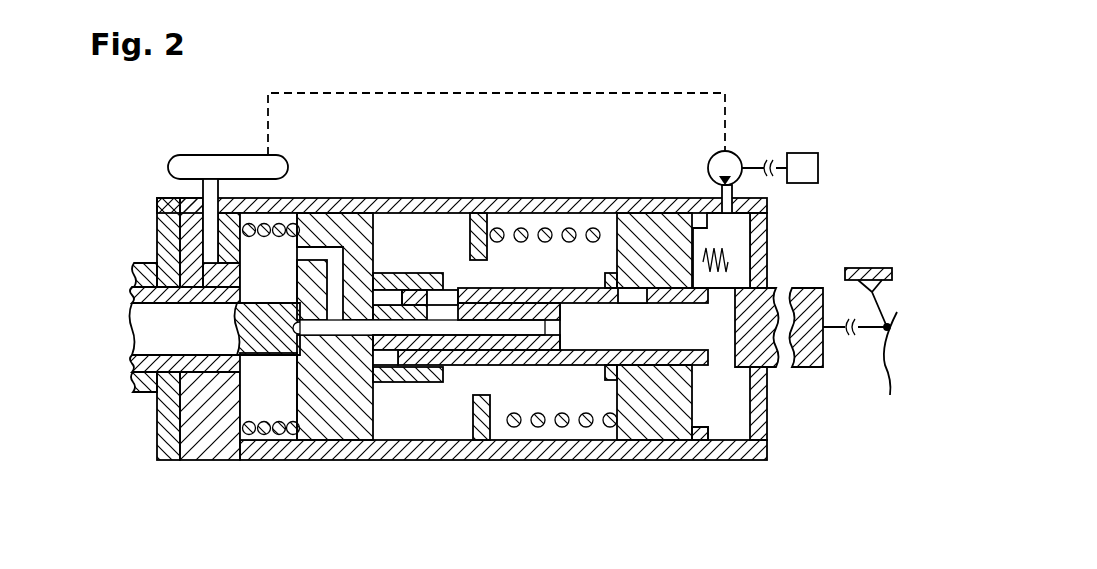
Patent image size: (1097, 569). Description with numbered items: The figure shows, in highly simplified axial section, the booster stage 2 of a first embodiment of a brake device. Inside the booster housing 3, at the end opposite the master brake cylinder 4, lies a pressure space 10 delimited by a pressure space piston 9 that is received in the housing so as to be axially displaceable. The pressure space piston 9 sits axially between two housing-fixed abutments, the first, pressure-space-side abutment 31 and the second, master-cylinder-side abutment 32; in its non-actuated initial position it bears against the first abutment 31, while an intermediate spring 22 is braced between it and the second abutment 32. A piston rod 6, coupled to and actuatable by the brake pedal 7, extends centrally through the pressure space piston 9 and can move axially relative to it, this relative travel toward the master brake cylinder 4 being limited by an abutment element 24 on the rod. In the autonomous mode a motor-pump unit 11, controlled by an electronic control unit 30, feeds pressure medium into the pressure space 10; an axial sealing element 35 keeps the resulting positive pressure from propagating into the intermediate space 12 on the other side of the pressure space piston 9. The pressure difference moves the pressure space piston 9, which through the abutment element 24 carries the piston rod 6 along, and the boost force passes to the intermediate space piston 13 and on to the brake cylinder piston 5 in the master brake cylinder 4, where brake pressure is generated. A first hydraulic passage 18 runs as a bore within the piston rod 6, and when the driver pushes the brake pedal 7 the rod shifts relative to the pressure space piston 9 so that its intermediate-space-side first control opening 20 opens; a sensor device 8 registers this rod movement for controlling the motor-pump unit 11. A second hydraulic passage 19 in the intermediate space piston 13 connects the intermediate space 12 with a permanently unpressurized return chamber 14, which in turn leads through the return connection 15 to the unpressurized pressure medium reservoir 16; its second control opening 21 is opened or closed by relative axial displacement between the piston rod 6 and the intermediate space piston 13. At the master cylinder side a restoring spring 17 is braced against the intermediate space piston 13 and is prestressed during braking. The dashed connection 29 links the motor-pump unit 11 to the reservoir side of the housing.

The booster stage 2 is at (484, 182).
The booster housing 3 is at (425, 452).
The master brake cylinder 4 is at (168, 428).
The brake cylinder piston 5 is at (158, 393).
The piston rod 6 is at (758, 332).
The brake pedal 7 is at (873, 347).
The sensor device 8 is at (728, 262).
The pressure space piston 9 is at (648, 240).
The pressure space 10 is at (727, 233).
The motor-pump unit 11 is at (730, 163).
The intermediate space 12 is at (570, 393).
The intermediate space piston 13 is at (351, 237).
The return chamber 14 is at (273, 405).
The return connection 15 is at (210, 233).
The pressure medium reservoir 16 is at (219, 165).
The restoring spring 17 is at (258, 432).
The first hydraulic passage 18 is at (683, 320).
The second hydraulic passage 19 is at (360, 330).
The first control opening 20 is at (633, 292).
The second control opening 21 is at (454, 282).
The intermediate spring 22 is at (528, 430).
The abutment element 24 is at (606, 280).
The control line 29 is at (421, 92).
The electronic control unit 30 is at (818, 168).
The first abutment 31 is at (702, 210).
The second abutment 32 is at (483, 235).
The sealing element 35 is at (630, 380).